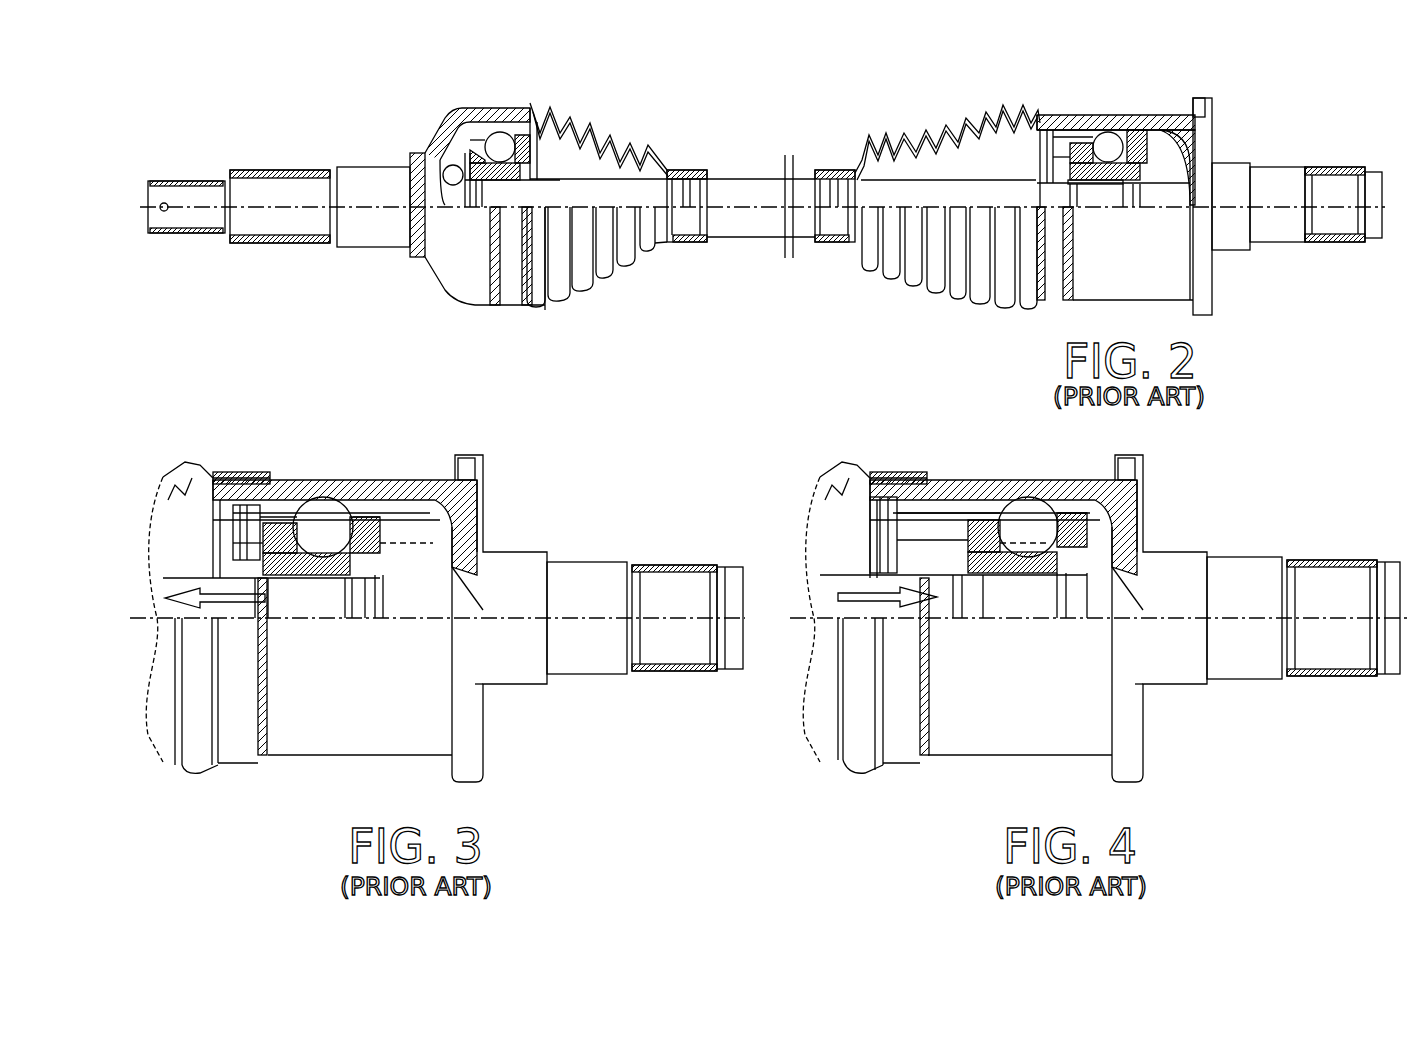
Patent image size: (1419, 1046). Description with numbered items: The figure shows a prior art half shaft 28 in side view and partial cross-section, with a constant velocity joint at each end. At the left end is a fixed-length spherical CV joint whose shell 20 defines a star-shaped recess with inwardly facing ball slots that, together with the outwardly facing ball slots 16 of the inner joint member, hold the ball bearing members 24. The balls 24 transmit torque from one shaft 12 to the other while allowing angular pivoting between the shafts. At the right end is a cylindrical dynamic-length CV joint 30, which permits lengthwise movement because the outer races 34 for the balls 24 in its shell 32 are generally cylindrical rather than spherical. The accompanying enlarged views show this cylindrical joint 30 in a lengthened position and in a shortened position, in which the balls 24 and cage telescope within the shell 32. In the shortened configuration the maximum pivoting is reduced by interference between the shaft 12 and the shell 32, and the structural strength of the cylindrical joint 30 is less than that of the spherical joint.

In FIG. 2, the shaft 12 is at (545, 160).
In FIG. 3, the shaft 12 is at (162, 587).
In FIG. 4, the shaft 12 is at (887, 585).
In FIG. 2, the outwardly facing ball slots 16 is at (577, 193).
In FIG. 2, the shell 20 is at (480, 107).
In FIG. 2, the ball bearing members 24 is at (502, 143).
In FIG. 2, the half shaft 28 is at (776, 85).
In FIG. 2, the dynamic-length CV joint 30 is at (1044, 108).
In FIG. 3, the dynamic-length CV joint 30 is at (330, 390).
In FIG. 4, the dynamic-length CV joint 30 is at (968, 420).
In FIG. 2, the shell 32 is at (1171, 120).
In FIG. 3, the shell 32 is at (417, 490).
In FIG. 4, the shell 32 is at (1063, 485).
In FIG. 2, the outer races 34 is at (1133, 130).
In FIG. 3, the outer races 34 is at (370, 505).
In FIG. 4, the outer races 34 is at (958, 505).